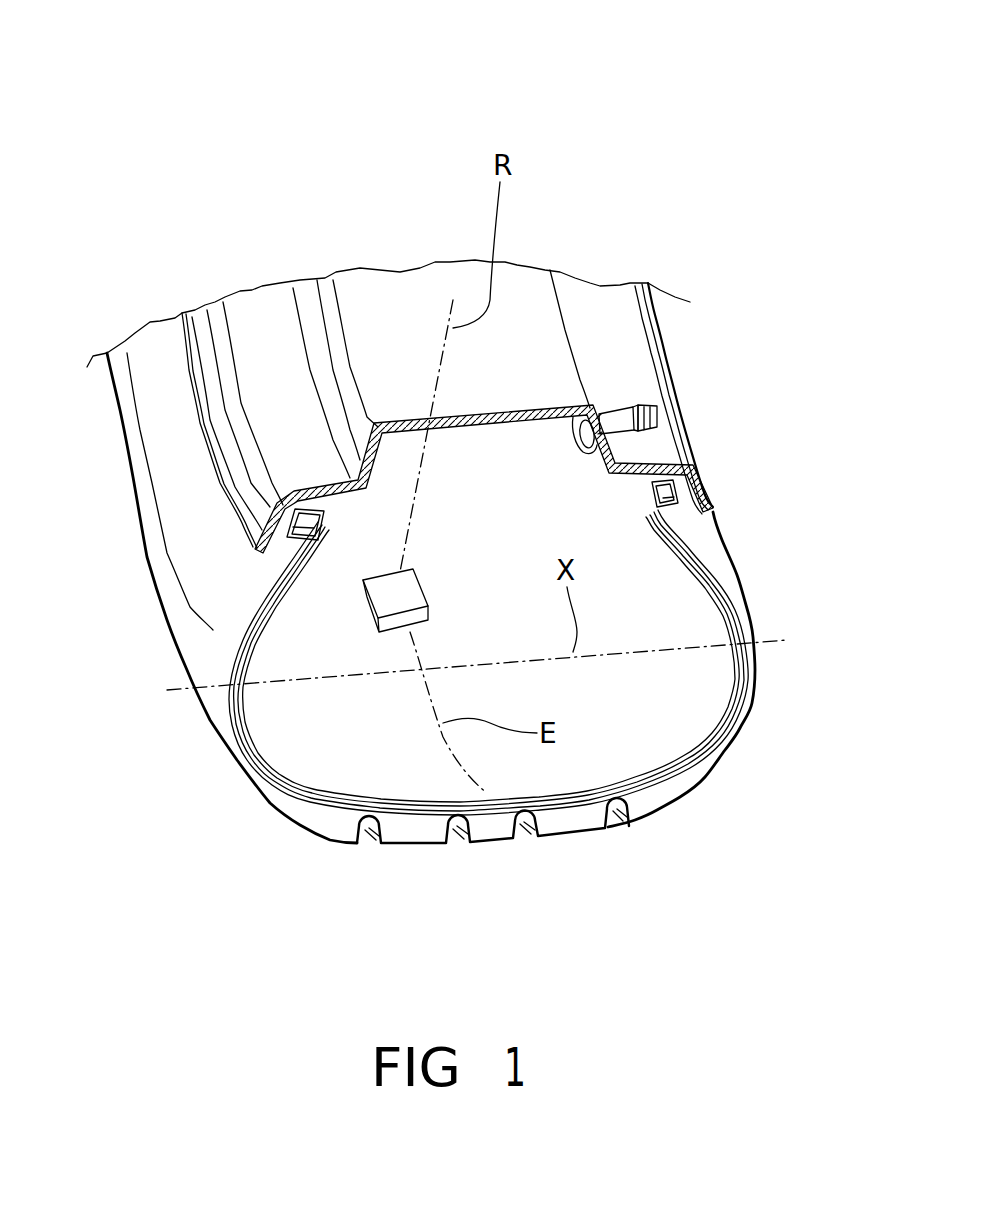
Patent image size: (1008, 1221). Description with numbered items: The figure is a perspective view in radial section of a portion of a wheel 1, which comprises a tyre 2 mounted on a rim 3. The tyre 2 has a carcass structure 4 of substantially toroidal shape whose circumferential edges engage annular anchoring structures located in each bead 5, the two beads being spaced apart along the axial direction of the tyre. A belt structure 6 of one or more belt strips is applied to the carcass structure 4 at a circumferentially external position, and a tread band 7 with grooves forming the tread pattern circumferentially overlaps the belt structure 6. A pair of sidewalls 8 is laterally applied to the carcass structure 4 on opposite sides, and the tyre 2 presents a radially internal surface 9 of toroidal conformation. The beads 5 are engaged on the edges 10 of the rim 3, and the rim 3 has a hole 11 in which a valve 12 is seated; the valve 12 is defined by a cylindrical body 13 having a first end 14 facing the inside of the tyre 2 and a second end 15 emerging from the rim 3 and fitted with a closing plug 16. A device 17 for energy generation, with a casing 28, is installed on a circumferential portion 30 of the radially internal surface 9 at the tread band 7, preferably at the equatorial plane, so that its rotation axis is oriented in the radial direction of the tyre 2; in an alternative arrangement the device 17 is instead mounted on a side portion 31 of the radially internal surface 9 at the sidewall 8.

The wheel 1 is at (603, 155).
The tyre 2 is at (203, 713).
The rim 3 is at (398, 305).
The carcass structure 4 is at (737, 597).
The bead 5 is at (290, 523).
The belt structure 6 is at (483, 813).
The tread band 7 is at (578, 830).
The sidewall 8 is at (212, 651).
The radially internal surface 9 is at (677, 700).
The edge of the rim 10 is at (262, 533).
The hole 11 is at (587, 433).
The valve 12 is at (625, 398).
The cylindrical body 13 is at (627, 432).
The first end 14 is at (580, 420).
The second end 15 is at (650, 412).
The closing plug 16 is at (658, 424).
The device for energy generation 17 is at (430, 553).
The casing 28 is at (432, 600).
The circumferential portion 30 is at (380, 770).
The side portion 31 is at (690, 623).